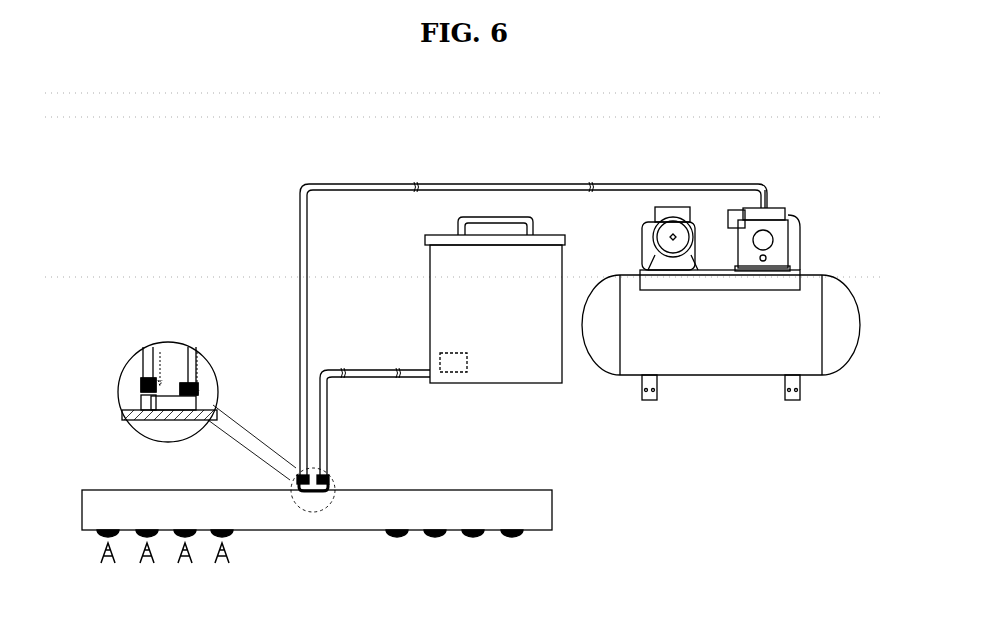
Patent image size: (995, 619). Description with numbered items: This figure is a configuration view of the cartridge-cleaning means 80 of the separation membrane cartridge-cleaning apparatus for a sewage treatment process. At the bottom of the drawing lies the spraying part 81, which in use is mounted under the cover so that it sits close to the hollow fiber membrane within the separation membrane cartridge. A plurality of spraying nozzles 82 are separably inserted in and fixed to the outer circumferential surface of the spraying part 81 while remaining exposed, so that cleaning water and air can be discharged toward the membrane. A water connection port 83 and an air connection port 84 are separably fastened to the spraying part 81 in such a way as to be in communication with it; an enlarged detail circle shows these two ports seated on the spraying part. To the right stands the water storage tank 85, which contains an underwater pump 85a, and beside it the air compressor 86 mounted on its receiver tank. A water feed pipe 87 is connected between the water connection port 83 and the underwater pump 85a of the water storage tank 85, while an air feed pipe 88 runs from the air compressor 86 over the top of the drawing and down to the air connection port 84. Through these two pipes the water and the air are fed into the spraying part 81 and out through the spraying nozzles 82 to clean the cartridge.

The cartridge-cleaning means 80 is at (462, 185).
The spraying part 81 is at (443, 497).
The spraying nozzles 82 is at (397, 538).
The water connection port 83 is at (333, 482).
The air connection port 84 is at (292, 487).
The water storage tank 85 is at (533, 372).
The underwater pump 85a is at (458, 372).
The air compressor 86 is at (710, 362).
The water feed pipe 87 is at (370, 378).
The air feed pipe 88 is at (538, 178).